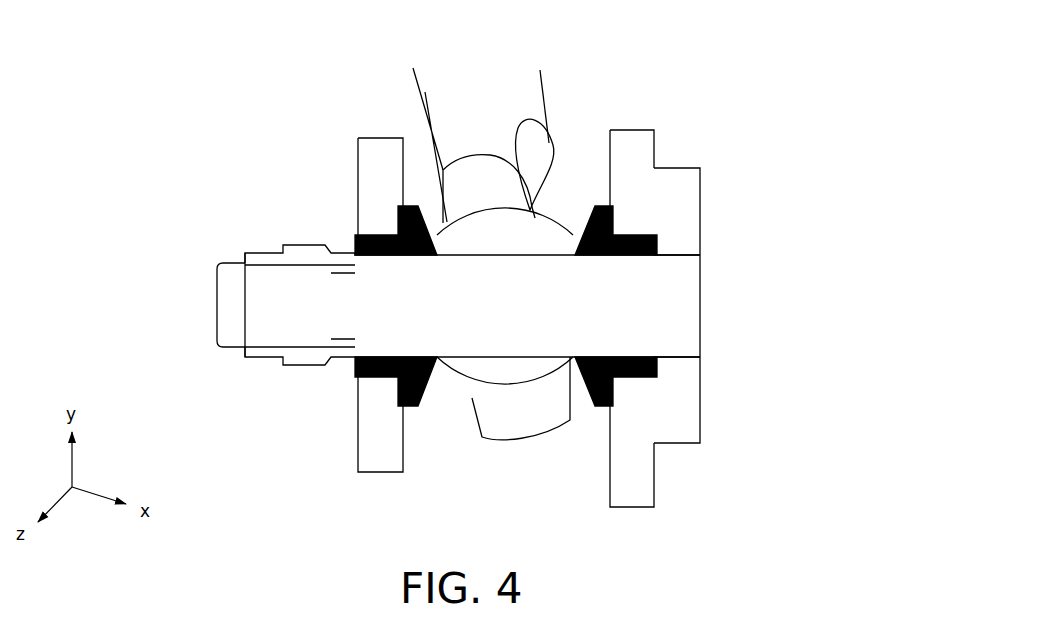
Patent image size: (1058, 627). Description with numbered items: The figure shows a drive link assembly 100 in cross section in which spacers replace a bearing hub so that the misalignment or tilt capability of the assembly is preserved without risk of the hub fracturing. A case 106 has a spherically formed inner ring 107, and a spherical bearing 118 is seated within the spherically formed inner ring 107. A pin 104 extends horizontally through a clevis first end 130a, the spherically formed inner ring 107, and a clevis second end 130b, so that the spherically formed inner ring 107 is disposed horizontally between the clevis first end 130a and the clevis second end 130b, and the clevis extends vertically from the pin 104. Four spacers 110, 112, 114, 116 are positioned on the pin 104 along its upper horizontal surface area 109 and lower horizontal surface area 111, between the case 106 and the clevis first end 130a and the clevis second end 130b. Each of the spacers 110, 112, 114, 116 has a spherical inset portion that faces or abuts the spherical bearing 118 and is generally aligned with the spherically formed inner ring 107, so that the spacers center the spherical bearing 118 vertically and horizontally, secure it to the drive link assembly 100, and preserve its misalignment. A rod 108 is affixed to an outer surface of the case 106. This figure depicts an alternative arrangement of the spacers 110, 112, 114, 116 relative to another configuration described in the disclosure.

The drive link assembly 100 is at (690, 105).
The pin 104 is at (230, 305).
The case 106 is at (482, 437).
The spherically formed inner ring 107 is at (517, 192).
The rod 108 is at (435, 105).
The upper horizontal surface area 109 is at (475, 255).
The spacer 110 is at (380, 232).
The lower horizontal surface area 111 is at (562, 358).
The spacer 112 is at (362, 378).
The spacer 114 is at (632, 232).
The spacer 116 is at (655, 380).
The spherical bearing 118 is at (508, 382).
The clevis first end 130a is at (388, 457).
The clevis second end 130b is at (643, 455).